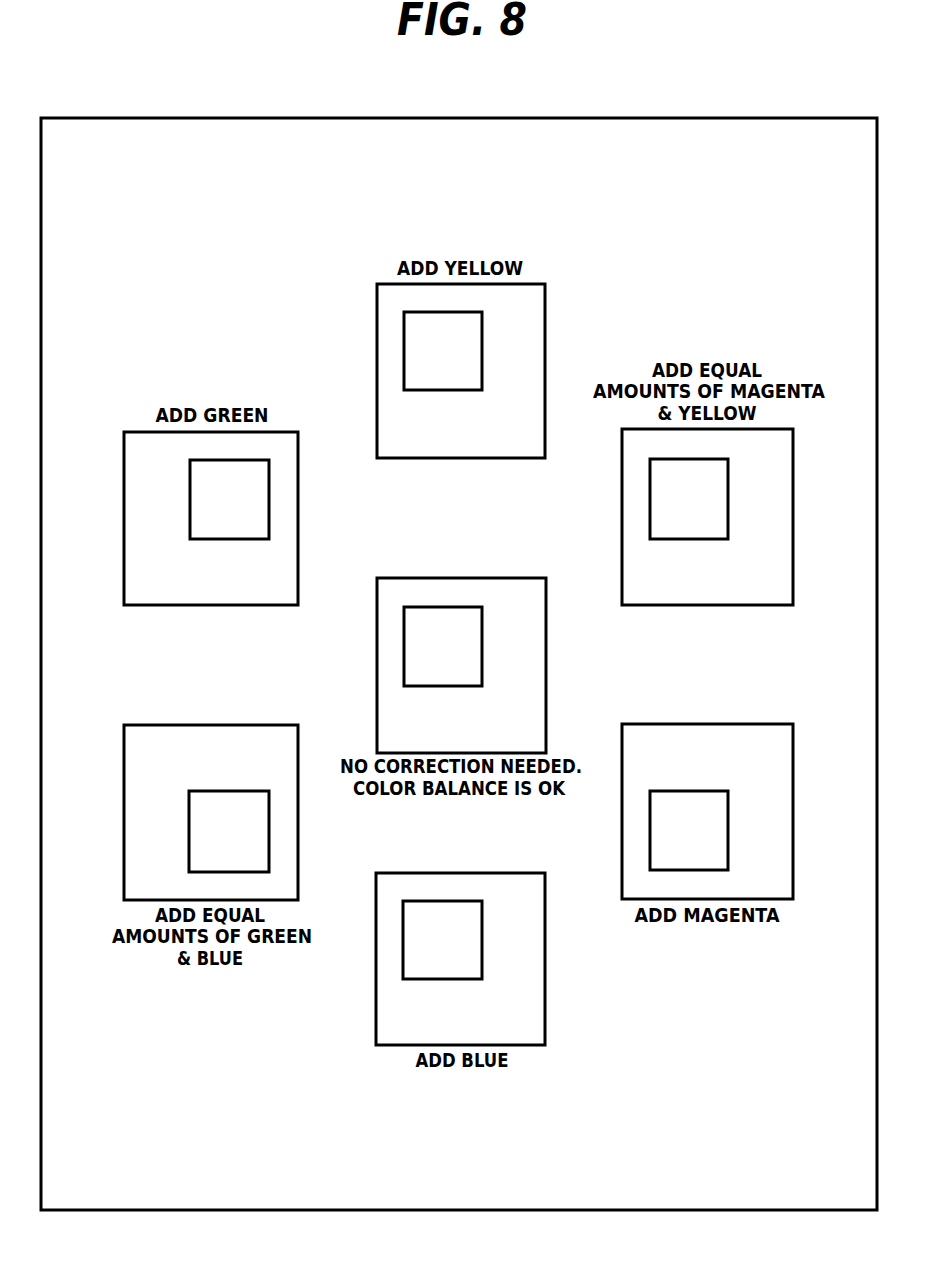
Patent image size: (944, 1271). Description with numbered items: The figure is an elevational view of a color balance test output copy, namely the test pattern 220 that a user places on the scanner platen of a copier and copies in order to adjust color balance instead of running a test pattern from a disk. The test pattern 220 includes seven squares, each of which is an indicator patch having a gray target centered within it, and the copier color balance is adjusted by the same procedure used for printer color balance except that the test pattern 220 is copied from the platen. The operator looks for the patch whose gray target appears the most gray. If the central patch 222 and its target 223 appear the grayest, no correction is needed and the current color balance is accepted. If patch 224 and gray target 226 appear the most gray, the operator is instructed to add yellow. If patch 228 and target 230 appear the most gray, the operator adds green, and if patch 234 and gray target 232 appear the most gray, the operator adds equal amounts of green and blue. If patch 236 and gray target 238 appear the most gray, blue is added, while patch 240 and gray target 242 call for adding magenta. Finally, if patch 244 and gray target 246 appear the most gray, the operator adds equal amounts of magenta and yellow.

The test pattern 220 is at (112, 100).
The patch 222 is at (377, 617).
The target 223 is at (404, 657).
The patch 224 is at (377, 310).
The gray target 226 is at (404, 350).
The patch 228 is at (298, 470).
The target 230 is at (269, 510).
The gray target 232 is at (189, 838).
The patch 234 is at (125, 800).
The patch 236 is at (535, 925).
The gray target 238 is at (482, 965).
The patch 240 is at (781, 797).
The gray target 242 is at (728, 838).
The patch 244 is at (622, 483).
The gray target 246 is at (650, 522).